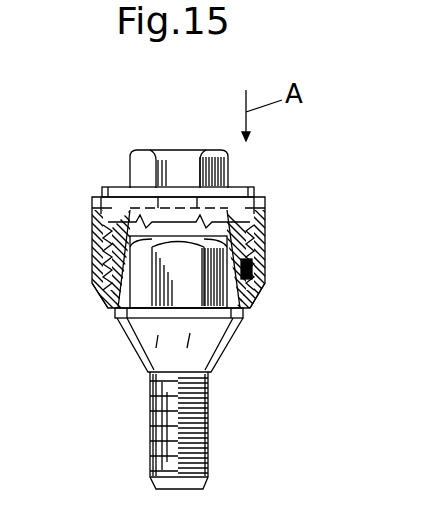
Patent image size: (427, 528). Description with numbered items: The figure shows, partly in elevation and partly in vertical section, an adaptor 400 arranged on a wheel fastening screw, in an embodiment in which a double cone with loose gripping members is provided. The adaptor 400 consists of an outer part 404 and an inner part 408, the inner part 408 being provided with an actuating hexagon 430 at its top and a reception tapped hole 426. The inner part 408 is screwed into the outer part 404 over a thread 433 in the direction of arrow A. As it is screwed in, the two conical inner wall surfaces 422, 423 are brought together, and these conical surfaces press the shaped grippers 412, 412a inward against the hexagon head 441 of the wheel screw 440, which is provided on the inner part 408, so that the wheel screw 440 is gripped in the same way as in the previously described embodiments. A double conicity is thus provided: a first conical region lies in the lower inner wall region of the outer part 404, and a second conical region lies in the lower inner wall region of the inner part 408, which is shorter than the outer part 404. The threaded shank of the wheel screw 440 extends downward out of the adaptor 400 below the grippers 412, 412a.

The adaptor 400 is at (284, 196).
The outer part 404 is at (96, 244).
The inner part 408 is at (240, 186).
The shaped gripper 412 is at (92, 290).
The shaped gripper 412a is at (247, 296).
The conical inner wall surface 422 is at (262, 245).
The conical inner wall surface 423 is at (266, 283).
The reception tapped hole 426 is at (190, 168).
The actuating hexagon 430 is at (143, 168).
The thread 433 is at (102, 191).
The wheel screw 440 is at (150, 434).
The hexagon head 441 is at (236, 318).